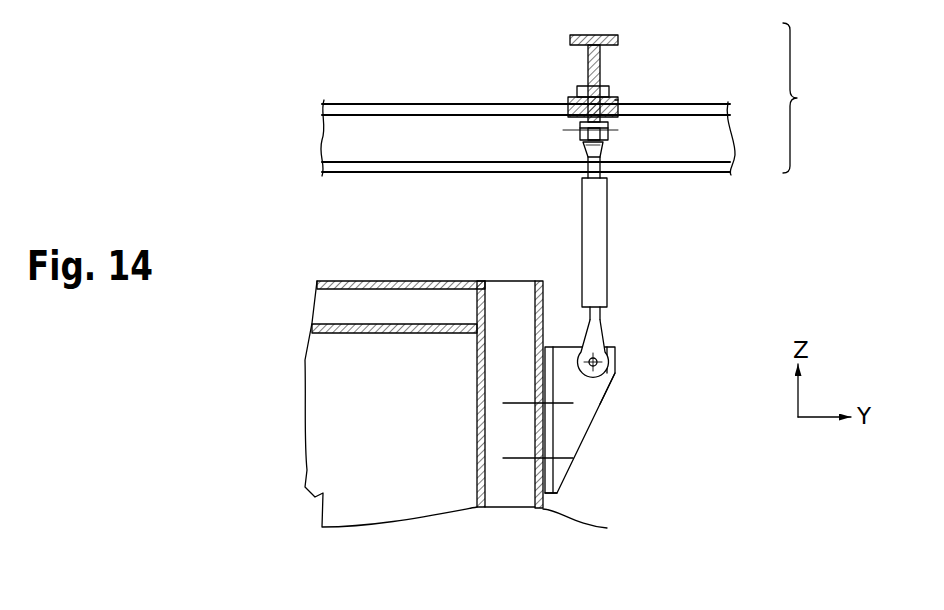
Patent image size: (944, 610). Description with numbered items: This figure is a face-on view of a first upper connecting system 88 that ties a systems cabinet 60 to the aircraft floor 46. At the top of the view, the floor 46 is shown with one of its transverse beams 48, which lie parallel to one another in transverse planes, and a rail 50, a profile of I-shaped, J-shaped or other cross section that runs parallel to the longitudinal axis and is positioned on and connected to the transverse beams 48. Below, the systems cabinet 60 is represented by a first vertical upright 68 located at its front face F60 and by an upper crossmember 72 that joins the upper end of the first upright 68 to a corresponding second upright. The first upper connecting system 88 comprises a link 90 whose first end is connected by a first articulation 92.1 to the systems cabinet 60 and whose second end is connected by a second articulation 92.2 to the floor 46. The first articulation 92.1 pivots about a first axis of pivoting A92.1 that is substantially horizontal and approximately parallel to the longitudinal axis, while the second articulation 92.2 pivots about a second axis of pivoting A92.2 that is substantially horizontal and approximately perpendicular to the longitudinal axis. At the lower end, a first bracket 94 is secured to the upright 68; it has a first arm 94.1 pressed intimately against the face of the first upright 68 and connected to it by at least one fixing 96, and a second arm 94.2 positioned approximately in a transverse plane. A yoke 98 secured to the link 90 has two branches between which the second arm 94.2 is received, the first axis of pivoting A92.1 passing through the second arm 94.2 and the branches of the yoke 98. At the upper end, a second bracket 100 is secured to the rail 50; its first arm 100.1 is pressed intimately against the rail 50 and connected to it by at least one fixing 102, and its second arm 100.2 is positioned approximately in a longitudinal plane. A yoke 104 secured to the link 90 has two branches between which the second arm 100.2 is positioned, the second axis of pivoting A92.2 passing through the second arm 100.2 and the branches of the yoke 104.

The floor 46 is at (805, 98).
The transverse beam 48 is at (320, 141).
The rail 50 is at (614, 68).
The systems cabinet 60 is at (303, 427).
The front face F60 is at (599, 525).
The first vertical upright 68 is at (492, 490).
The upper crossmember 72 is at (354, 304).
The first upper connecting system 88 is at (723, 232).
The link 90 is at (599, 267).
The first articulation 92.1 is at (628, 354).
The second articulation 92.2 is at (547, 121).
The first axis of pivoting A92.1 is at (605, 378).
The second axis of pivoting A92.2 is at (618, 130).
The first bracket 94 is at (568, 440).
The first arm 94.1 is at (550, 483).
The second arm 94.2 is at (590, 410).
The fixing 96 is at (501, 402).
The yoke 98 is at (607, 340).
The second bracket 100 is at (570, 121).
The first arm 100.1 is at (615, 110).
The second arm 100.2 is at (577, 135).
The fixing 102 is at (577, 92).
The yoke 104 is at (575, 147).